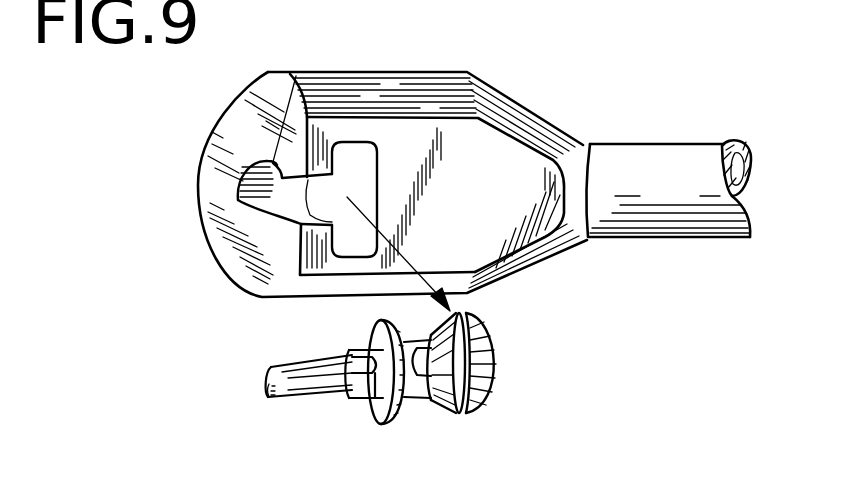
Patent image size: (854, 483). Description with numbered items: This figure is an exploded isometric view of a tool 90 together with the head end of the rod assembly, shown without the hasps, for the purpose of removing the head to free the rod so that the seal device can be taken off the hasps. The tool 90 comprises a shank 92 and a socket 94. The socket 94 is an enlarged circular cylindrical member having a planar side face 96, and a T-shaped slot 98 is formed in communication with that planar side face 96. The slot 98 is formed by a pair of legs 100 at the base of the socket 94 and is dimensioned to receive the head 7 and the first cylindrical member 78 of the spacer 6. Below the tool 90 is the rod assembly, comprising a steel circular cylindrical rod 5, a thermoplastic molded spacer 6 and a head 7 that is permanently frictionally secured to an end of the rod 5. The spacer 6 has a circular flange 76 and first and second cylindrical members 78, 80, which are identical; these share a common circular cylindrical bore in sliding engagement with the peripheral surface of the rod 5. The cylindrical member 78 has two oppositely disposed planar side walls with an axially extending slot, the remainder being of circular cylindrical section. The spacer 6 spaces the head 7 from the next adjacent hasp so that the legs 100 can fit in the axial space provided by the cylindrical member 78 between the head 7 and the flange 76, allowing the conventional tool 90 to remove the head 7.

The tool 90 is at (170, 157).
The shank 92 is at (647, 157).
The socket 94 is at (243, 240).
The planar side face 96 is at (492, 150).
The T-shaped slot 98 is at (350, 184).
The legs 100 is at (326, 143).
The spacer 6 is at (326, 339).
The rod 5 is at (288, 397).
The head 7 is at (472, 365).
The circular flange 76 is at (386, 426).
The first cylindrical member 78 is at (425, 392).
The second cylindrical member 80 is at (366, 392).